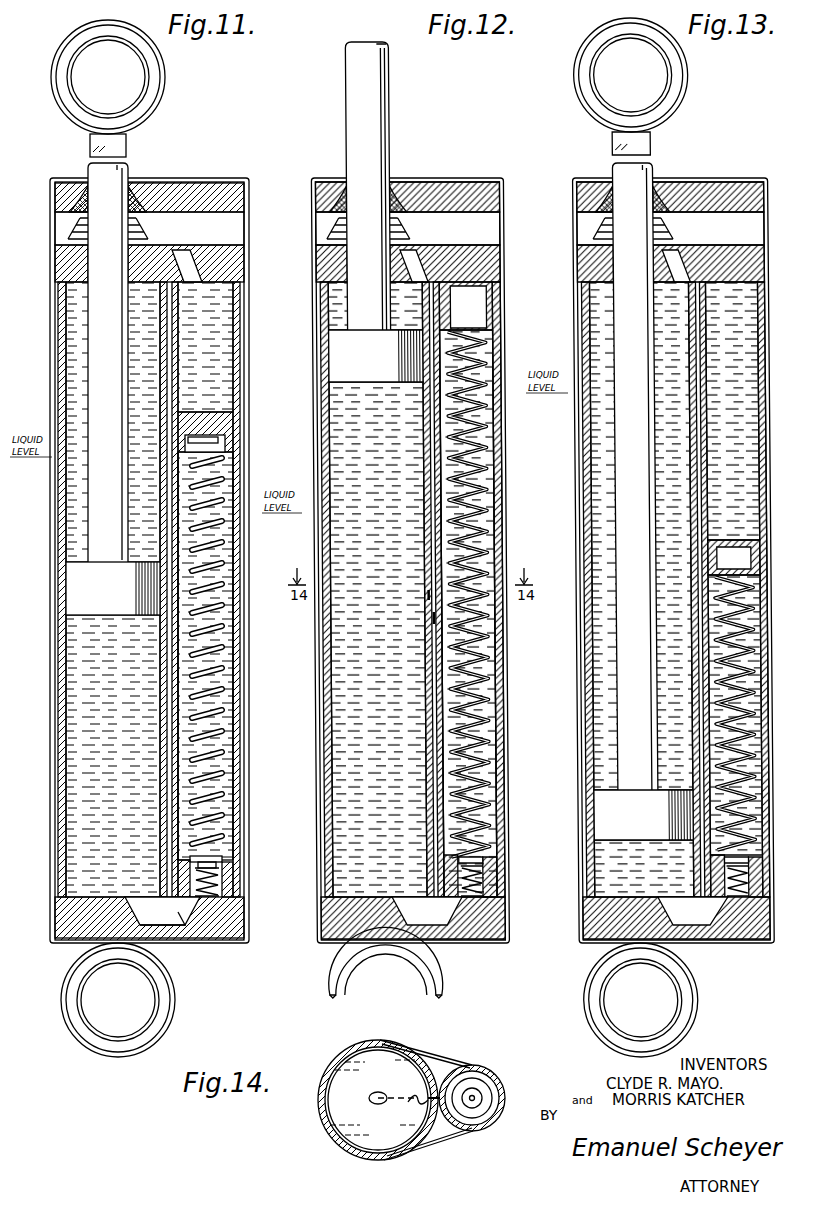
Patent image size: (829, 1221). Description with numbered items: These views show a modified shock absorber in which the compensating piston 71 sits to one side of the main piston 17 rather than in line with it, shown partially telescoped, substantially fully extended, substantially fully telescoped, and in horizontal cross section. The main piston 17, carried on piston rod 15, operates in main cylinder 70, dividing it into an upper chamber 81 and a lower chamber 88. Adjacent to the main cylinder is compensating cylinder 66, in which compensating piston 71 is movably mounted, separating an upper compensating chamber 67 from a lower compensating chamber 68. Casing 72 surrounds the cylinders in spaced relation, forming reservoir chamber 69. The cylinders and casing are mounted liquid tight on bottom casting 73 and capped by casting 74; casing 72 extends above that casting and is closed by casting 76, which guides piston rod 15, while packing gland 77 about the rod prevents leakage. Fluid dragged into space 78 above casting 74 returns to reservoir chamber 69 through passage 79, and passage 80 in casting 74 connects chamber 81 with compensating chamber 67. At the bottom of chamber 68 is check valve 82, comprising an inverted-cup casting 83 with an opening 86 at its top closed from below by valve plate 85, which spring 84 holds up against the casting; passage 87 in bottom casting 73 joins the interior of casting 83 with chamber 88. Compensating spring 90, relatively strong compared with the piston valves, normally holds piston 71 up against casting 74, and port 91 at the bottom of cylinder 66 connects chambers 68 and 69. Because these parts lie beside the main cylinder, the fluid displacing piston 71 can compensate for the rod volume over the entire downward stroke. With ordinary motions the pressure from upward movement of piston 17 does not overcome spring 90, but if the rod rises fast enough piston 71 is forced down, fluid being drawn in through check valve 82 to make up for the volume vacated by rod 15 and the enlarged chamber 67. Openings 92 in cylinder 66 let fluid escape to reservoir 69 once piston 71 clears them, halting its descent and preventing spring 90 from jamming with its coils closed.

In FIG. 11, the piston rod 15 is at (100, 372).
In FIG. 12, the piston rod 15 is at (370, 157).
In FIG. 13, the piston rod 15 is at (625, 470).
In FIG. 11, the main piston 17 is at (80, 582).
In FIG. 12, the main piston 17 is at (340, 347).
In FIG. 13, the main piston 17 is at (600, 814).
In FIG. 11, the compensating cylinder 66 is at (240, 374).
In FIG. 12, the compensating cylinder 66 is at (497, 448).
In FIG. 13, the compensating cylinder 66 is at (760, 408).
In FIG. 14, the compensating cylinder 66 is at (495, 1072).
In FIG. 11, the compensating chamber 67 is at (225, 326).
In FIG. 13, the compensating chamber 67 is at (745, 340).
In FIG. 11, the compensating chamber 68 is at (225, 665).
In FIG. 12, the compensating chamber 68 is at (485, 685).
In FIG. 13, the compensating chamber 68 is at (750, 672).
In FIG. 11, the reservoir chamber 69 is at (240, 470).
In FIG. 12, the reservoir chamber 69 is at (497, 555).
In FIG. 14, the reservoir chamber 69 is at (455, 1060).
In FIG. 11, the main cylinder 70 is at (56, 688).
In FIG. 12, the main cylinder 70 is at (316, 736).
In FIG. 13, the main cylinder 70 is at (583, 718).
In FIG. 14, the main cylinder 70 is at (425, 1056).
In FIG. 11, the compensating piston 71 is at (225, 425).
In FIG. 12, the compensating piston 71 is at (470, 300).
In FIG. 13, the compensating piston 71 is at (745, 553).
In FIG. 14, the casing 72 is at (415, 1050).
In FIG. 11, the bottom casting 73 is at (70, 930).
In FIG. 12, the bottom casting 73 is at (330, 918).
In FIG. 13, the bottom casting 73 is at (590, 915).
In FIG. 11, the casting 74 is at (226, 268).
In FIG. 12, the casting 74 is at (408, 263).
In FIG. 13, the casting 74 is at (590, 265).
In FIG. 11, the casting 76 is at (230, 203).
In FIG. 12, the casting 76 is at (407, 197).
In FIG. 13, the casting 76 is at (700, 188).
In FIG. 11, the packing gland 77 is at (135, 188).
In FIG. 11, the space 78 is at (226, 228).
In FIG. 11, the passage 79 is at (165, 270).
In FIG. 11, the passage 80 is at (190, 265).
In FIG. 12, the passage 80 is at (432, 262).
In FIG. 11, the chamber 81 is at (70, 322).
In FIG. 12, the chamber 81 is at (335, 298).
In FIG. 13, the chamber 81 is at (600, 322).
In FIG. 11, the check valve 82 is at (228, 884).
In FIG. 12, the check valve 82 is at (487, 866).
In FIG. 13, the check valve 82 is at (750, 864).
In FIG. 11, the casting 83 is at (230, 866).
In FIG. 11, the spring 84 is at (236, 896).
In FIG. 11, the valve plate 85 is at (205, 865).
In FIG. 11, the opening 86 is at (215, 858).
In FIG. 11, the passage 87 is at (188, 906).
In FIG. 14, the passage 87 is at (371, 1096).
In FIG. 11, the chamber 88 is at (90, 784).
In FIG. 12, the chamber 88 is at (350, 735).
In FIG. 13, the chamber 88 is at (610, 880).
In FIG. 11, the compensating spring 90 is at (240, 718).
In FIG. 12, the compensating spring 90 is at (480, 648).
In FIG. 11, the port 91 is at (165, 835).
In FIG. 12, the port 91 is at (440, 845).
In FIG. 12, the openings 92 is at (432, 593).
In FIG. 14, the openings 92 is at (410, 1104).